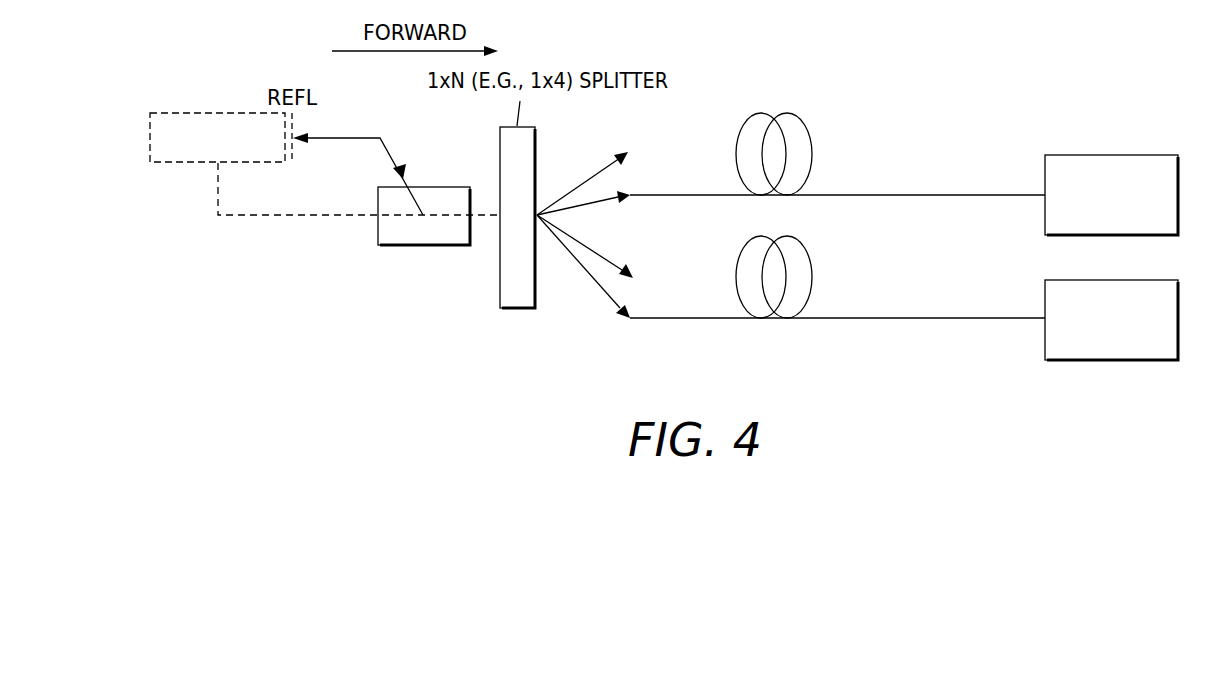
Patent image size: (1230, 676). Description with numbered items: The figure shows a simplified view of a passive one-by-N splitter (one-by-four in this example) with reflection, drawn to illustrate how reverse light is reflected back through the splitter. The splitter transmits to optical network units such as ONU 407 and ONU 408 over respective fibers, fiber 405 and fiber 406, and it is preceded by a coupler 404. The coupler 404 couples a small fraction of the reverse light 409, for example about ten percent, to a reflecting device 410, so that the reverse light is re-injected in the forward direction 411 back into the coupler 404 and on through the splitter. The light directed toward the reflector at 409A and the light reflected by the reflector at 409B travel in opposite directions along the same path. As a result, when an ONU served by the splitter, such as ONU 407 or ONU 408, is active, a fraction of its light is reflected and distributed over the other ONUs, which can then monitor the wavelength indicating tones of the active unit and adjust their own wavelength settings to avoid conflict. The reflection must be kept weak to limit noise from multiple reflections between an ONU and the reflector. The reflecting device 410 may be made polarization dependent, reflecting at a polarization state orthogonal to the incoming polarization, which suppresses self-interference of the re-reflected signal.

The coupler 404 is at (378, 238).
The fiber 405 is at (903, 194).
The fiber 406 is at (903, 317).
The ONU 407 is at (1160, 155).
The ONU 408 is at (1160, 280).
The reverse light 409 is at (352, 137).
The light directed to the reflector 409A is at (305, 143).
The light reflected by the reflector 409B is at (420, 162).
The reflecting device 410 is at (218, 112).
The forward direction 411 is at (216, 198).